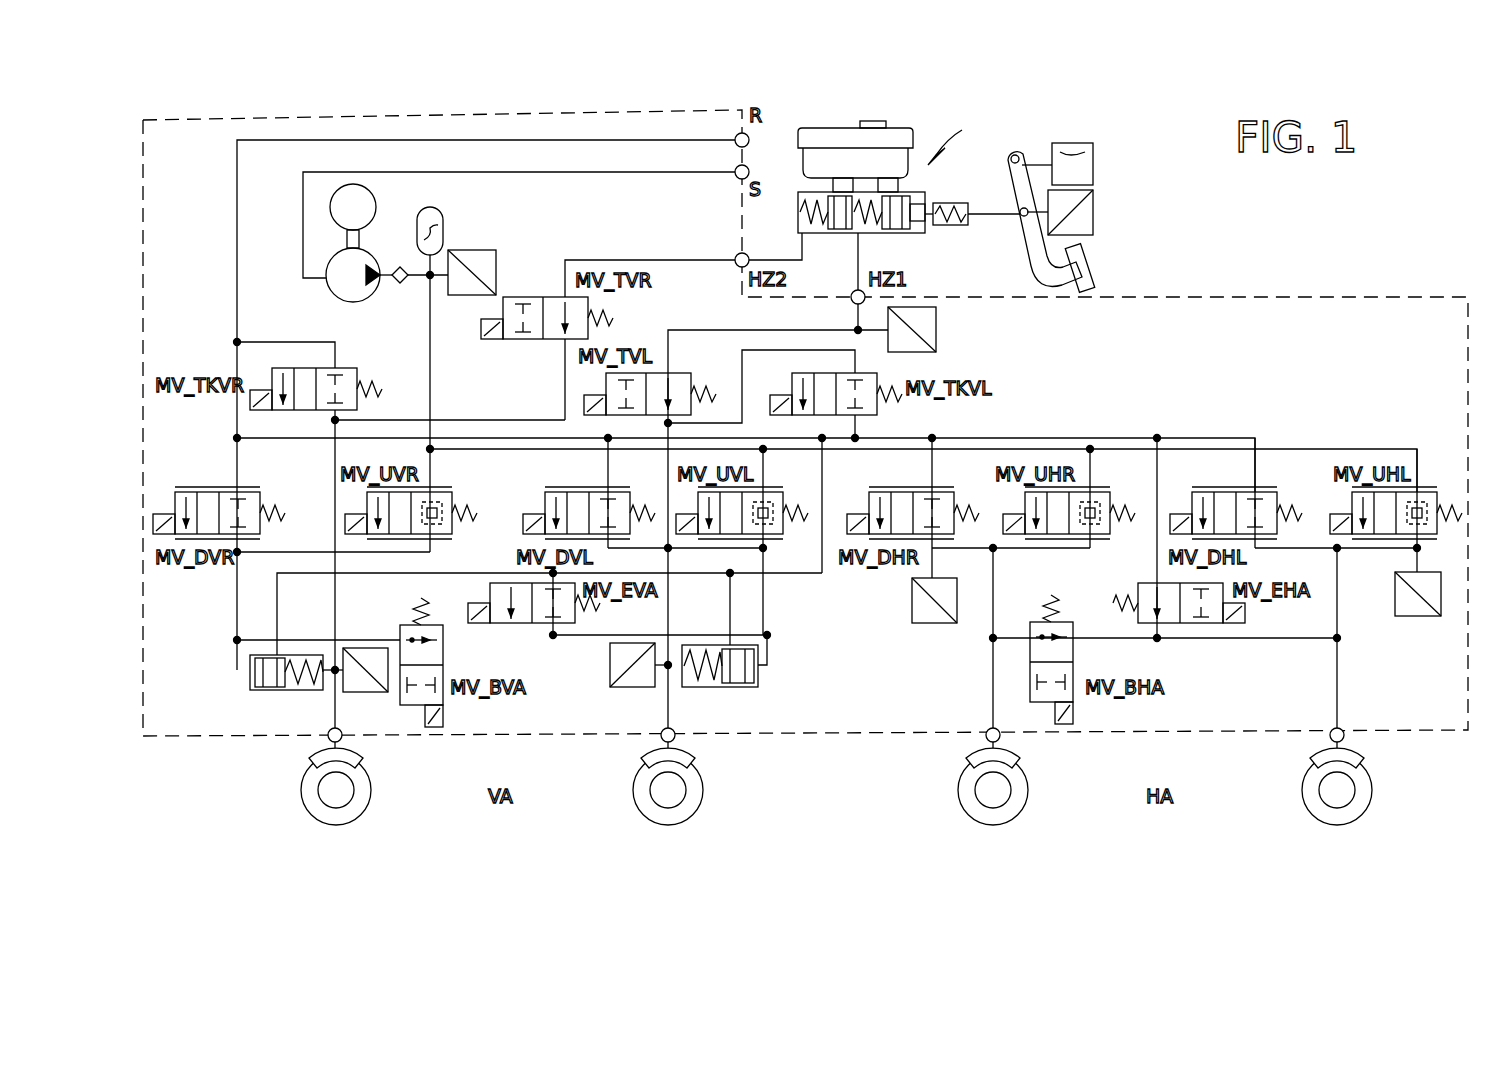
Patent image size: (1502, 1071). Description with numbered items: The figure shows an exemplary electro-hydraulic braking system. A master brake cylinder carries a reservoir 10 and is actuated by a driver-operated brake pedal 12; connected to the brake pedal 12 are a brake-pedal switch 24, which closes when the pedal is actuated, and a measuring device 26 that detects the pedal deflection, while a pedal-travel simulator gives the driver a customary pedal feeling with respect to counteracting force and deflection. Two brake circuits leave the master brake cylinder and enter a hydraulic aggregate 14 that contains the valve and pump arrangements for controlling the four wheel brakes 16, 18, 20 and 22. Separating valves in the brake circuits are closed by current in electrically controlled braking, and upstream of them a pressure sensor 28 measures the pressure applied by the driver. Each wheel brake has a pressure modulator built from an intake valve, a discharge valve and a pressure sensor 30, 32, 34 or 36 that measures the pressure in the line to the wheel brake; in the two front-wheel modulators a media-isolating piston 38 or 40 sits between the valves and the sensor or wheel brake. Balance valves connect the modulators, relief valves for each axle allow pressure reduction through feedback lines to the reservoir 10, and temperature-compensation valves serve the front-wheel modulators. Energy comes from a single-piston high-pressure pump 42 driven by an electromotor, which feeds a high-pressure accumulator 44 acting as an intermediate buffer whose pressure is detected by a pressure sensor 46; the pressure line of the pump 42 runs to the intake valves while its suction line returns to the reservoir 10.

The reservoir 10 is at (828, 135).
The brake pedal 12 is at (1092, 262).
The hydraulic aggregate 14 is at (712, 106).
The wheel brake 16 is at (303, 816).
The wheel brake 18 is at (700, 813).
The wheel brake 20 is at (958, 810).
The wheel brake 22 is at (1302, 810).
The brake-pedal switch 24 is at (1093, 165).
The measuring device 26 is at (1093, 215).
The pressure sensor 28 is at (937, 337).
The pressure sensor 30 is at (368, 692).
The pressure sensor 32 is at (630, 687).
The pressure sensor 34 is at (932, 623).
The pressure sensor 36 is at (1415, 616).
The media-isolating piston 38 is at (250, 690).
The media-isolating piston 40 is at (758, 678).
The single-piston high-pressure pump 42 is at (343, 284).
The high-pressure accumulator 44 is at (440, 237).
The pressure sensor 46 is at (497, 272).